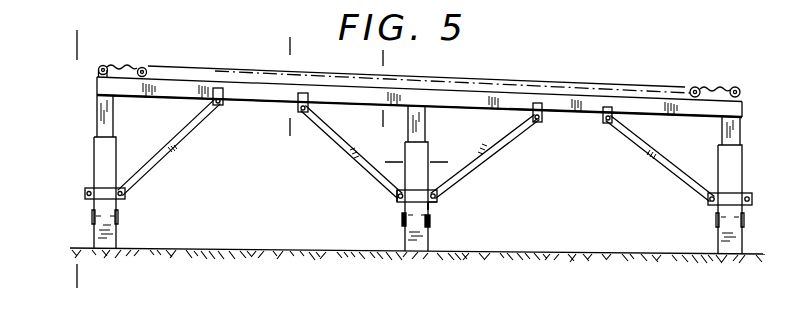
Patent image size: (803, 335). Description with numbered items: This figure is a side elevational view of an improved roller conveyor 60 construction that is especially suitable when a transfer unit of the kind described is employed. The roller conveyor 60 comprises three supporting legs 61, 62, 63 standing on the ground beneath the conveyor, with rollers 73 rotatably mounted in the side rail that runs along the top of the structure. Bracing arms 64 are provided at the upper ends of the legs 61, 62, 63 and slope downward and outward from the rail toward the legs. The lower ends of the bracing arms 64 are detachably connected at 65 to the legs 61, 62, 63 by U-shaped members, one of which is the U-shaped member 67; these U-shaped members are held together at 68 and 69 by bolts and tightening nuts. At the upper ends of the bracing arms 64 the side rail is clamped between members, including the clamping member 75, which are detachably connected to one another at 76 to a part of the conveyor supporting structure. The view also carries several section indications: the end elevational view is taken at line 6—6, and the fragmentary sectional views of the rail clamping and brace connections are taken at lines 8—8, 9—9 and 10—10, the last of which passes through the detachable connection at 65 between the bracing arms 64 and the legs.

The section line 6— 6 is at (72, 37).
The section line 8— 8 is at (287, 45).
The section line 9— 9 is at (380, 58).
The section line 10— 10 is at (395, 146).
The roller conveyor 60 is at (205, 63).
The supporting leg 61 is at (97, 116).
The supporting leg 62 is at (427, 120).
The supporting leg 63 is at (741, 130).
The bracing arm 64 is at (166, 162).
The detachable connection 65 is at (84, 193).
The U-shaped member 67 is at (429, 206).
The bolt and nut fastening 68 is at (397, 201).
The bolt and nut fastening 69 is at (431, 203).
The roller 73 is at (140, 66).
The clamping member 75 is at (303, 93).
The detachable connection 76 is at (542, 120).